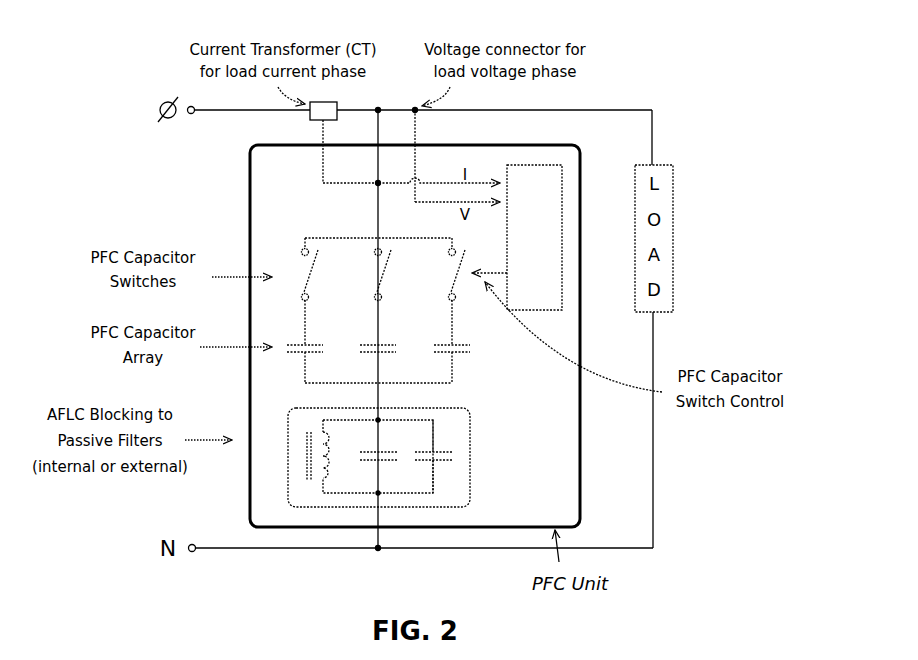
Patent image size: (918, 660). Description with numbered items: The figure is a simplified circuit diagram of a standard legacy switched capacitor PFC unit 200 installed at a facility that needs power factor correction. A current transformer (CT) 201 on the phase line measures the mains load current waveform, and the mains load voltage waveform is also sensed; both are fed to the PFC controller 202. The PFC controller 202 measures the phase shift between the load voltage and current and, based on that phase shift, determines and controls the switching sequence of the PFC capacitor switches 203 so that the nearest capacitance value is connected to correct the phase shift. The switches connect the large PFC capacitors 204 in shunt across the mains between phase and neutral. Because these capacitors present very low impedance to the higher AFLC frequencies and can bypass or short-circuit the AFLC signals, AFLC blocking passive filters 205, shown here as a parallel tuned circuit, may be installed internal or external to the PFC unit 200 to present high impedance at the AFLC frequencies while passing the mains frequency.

The PFC unit 200 is at (248, 210).
The current transformer (CT) 201 is at (305, 116).
The PFC controller 202 is at (565, 212).
The PFC capacitor switches 203 is at (442, 262).
The PFC capacitors 204 is at (313, 337).
The AFLC blocking passive filters 205 is at (476, 437).